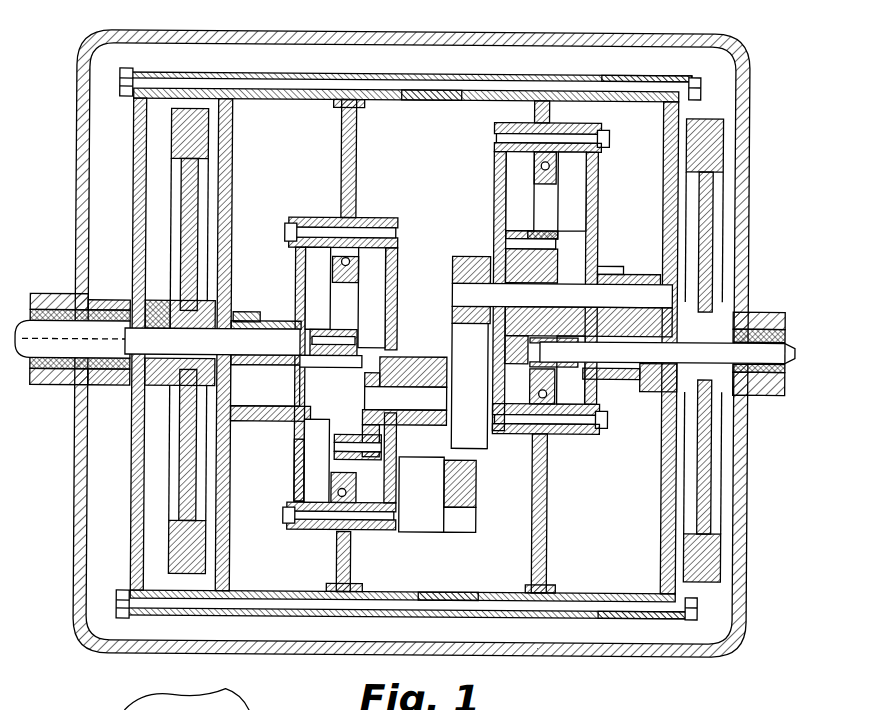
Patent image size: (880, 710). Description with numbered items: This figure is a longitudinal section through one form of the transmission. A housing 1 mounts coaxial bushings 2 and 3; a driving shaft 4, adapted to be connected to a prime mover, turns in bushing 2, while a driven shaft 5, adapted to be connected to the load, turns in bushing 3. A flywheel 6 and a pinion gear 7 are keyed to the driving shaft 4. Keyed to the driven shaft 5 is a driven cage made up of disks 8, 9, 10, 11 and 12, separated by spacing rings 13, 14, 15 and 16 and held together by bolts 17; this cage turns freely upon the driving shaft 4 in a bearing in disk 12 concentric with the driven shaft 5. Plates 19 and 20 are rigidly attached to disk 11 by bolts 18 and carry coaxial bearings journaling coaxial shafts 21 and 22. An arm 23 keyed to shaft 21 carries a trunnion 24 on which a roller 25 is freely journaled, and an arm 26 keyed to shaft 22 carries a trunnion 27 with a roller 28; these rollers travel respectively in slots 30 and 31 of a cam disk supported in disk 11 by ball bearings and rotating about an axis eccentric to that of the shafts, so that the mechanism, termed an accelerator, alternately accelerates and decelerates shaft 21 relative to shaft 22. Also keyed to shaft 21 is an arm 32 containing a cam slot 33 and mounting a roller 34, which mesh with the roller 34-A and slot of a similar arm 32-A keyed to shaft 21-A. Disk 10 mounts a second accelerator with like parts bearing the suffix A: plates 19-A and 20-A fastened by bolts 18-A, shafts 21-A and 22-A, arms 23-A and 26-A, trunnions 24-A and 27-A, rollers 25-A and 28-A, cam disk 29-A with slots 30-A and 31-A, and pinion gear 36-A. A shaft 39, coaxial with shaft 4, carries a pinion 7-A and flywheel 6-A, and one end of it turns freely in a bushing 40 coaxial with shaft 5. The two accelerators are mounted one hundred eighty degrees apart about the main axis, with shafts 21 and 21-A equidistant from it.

The housing 1 is at (748, 100).
The bushing 2 is at (752, 328).
The bushing 3 is at (50, 312).
The driving shaft 4 is at (790, 372).
The driven shaft 5 is at (32, 362).
The flywheel 6 is at (712, 118).
The flywheel 6-A is at (212, 138).
The pinion gear 7 is at (648, 392).
The pinion 7-A is at (241, 312).
The disk 8 is at (132, 175).
The disk 9 is at (231, 165).
The disk 10 is at (356, 162).
The disk 11 is at (556, 124).
The disk 12 is at (662, 150).
The spacing ring 13 is at (195, 74).
The spacing ring 14 is at (288, 90).
The spacing ring 15 is at (410, 90).
The spacing ring 16 is at (625, 74).
The bolt 17 is at (690, 78).
The bolt 18 is at (608, 146).
The bolt 18-A is at (290, 222).
The plate 19 is at (493, 204).
The plate 19-A is at (397, 252).
The plate 20 is at (597, 212).
The plate 20-A is at (290, 258).
The shaft 21 is at (452, 293).
The shaft 21-A is at (440, 402).
The shaft 22 is at (646, 262).
The shaft 22-A is at (295, 490).
The arm 23 is at (512, 230).
The arm 23-A is at (386, 372).
The trunnion 24 is at (556, 250).
The trunnion 24-A is at (382, 452).
The roller 25 is at (538, 230).
The roller 25-A is at (396, 462).
The arm 26 is at (597, 384).
The arm 26-A is at (300, 455).
The trunnion 27 is at (540, 348).
The trunnion 27-A is at (352, 330).
The roller 28 is at (540, 370).
The roller 28-A is at (336, 368).
The cam disk 29-A is at (358, 270).
The slot 30 is at (548, 191).
The slot 30-A is at (348, 312).
The slot 31 is at (560, 318).
The slot 31-A is at (345, 457).
The arm 32 is at (474, 256).
The arm 32-A is at (462, 488).
The cam slot 33 is at (488, 440).
The roller 34 is at (466, 450).
The roller 34-A is at (477, 520).
The pinion gear 36-A is at (258, 408).
The shaft 39 is at (270, 330).
The bushing 40 is at (152, 312).